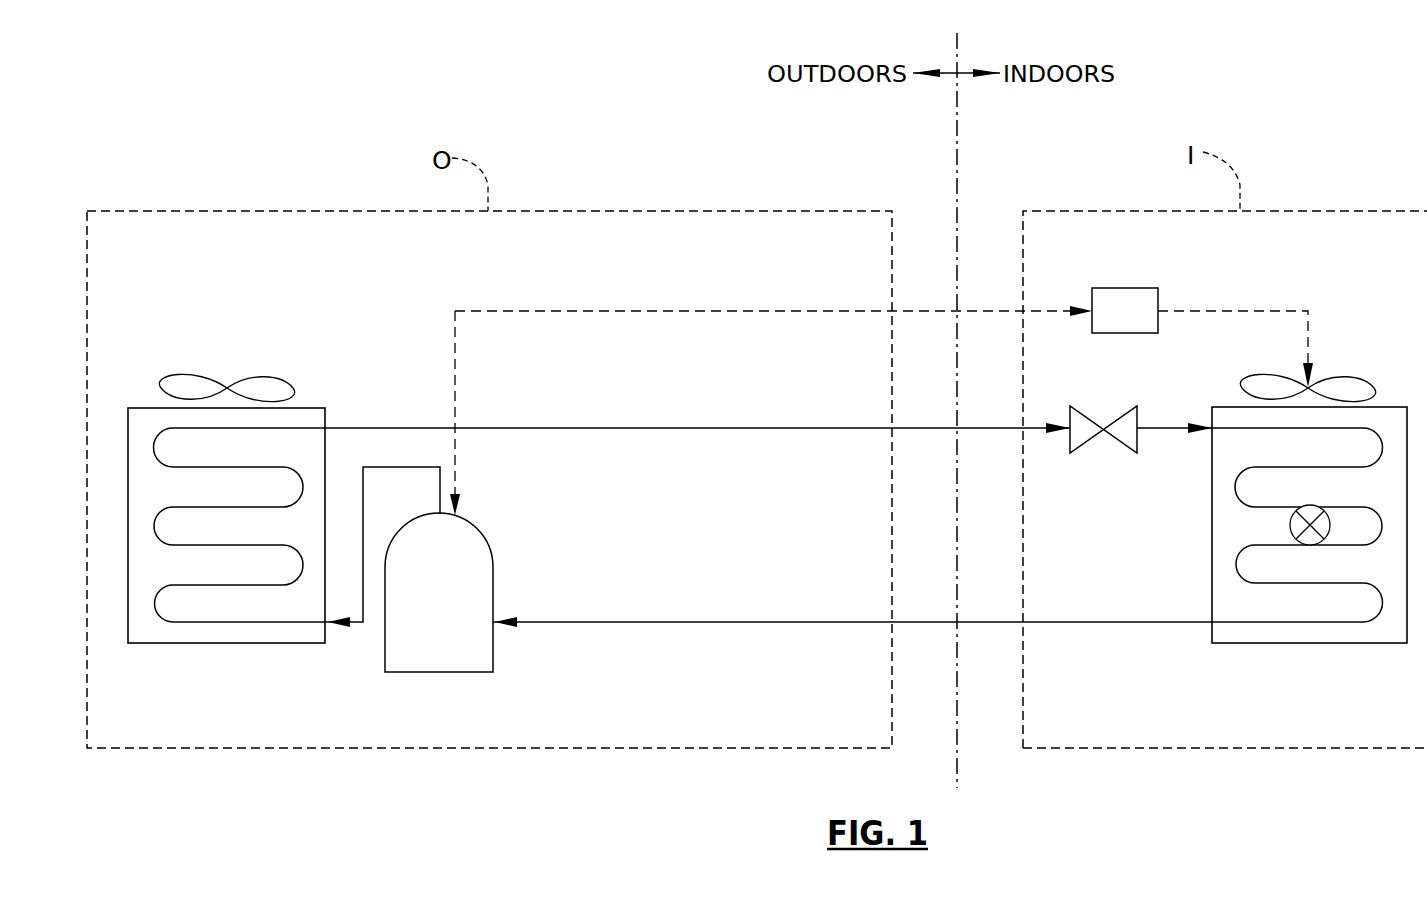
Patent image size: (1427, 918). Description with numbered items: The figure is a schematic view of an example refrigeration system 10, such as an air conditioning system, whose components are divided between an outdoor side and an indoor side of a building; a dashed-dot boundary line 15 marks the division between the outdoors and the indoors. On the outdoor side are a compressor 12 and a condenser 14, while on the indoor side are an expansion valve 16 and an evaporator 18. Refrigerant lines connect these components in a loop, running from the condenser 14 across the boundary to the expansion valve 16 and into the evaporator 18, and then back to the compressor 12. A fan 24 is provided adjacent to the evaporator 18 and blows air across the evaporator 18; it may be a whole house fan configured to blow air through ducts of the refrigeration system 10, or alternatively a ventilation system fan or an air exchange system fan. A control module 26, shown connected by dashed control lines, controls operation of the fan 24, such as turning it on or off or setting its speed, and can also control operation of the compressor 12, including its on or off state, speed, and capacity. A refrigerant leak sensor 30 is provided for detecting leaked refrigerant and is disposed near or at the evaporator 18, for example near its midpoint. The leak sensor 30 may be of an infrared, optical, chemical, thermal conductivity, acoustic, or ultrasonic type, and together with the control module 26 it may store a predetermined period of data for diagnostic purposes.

The refrigeration system 10 is at (614, 80).
The compressor 12 is at (456, 606).
The condenser 14 is at (225, 643).
The boundary between outdoors and indoors 15 is at (957, 48).
The expansion valve 16 is at (1116, 446).
The evaporator 18 is at (1212, 492).
The fan 24 is at (1350, 375).
The control module 26 is at (1140, 323).
The refrigerant leak sensor 30 is at (1290, 527).